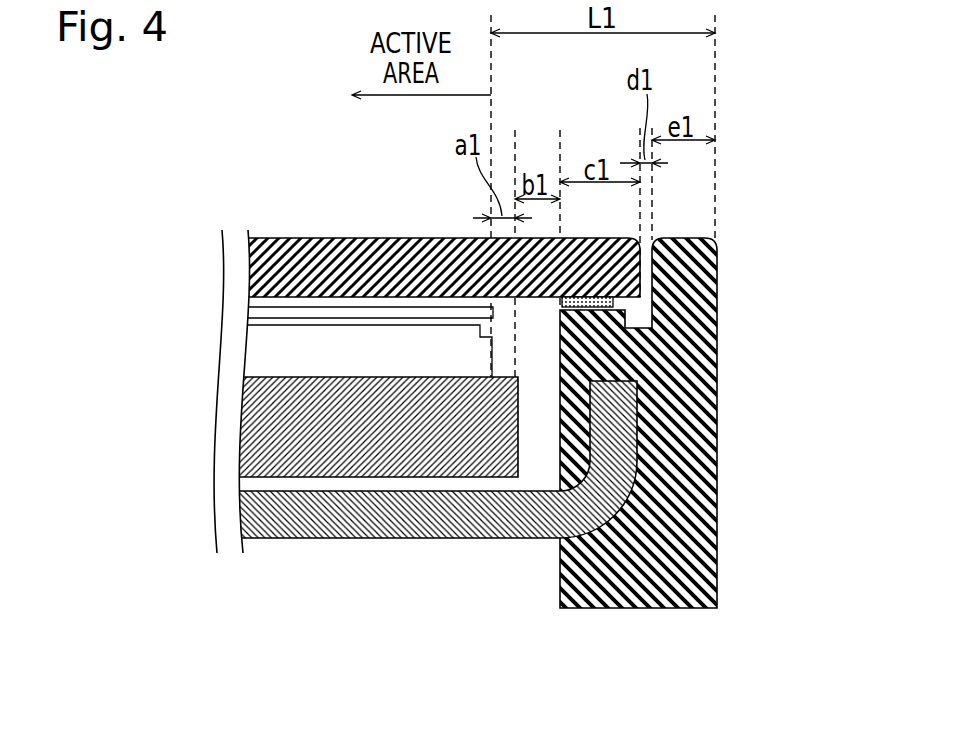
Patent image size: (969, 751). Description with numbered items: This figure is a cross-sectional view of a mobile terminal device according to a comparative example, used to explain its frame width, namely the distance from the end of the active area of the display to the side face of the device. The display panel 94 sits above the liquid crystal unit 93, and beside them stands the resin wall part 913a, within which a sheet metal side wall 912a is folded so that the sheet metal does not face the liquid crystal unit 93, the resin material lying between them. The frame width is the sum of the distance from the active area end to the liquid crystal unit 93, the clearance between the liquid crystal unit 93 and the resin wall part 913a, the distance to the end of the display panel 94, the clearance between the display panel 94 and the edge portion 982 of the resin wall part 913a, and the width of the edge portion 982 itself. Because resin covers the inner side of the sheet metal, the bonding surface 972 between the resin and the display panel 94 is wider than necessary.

The display panel 94 is at (333, 248).
The liquid crystal unit 93 is at (268, 444).
The bonding surface 972 is at (563, 300).
The edge portion 982 is at (700, 271).
The resin wall part 913a is at (690, 355).
The side wall 912a is at (637, 408).